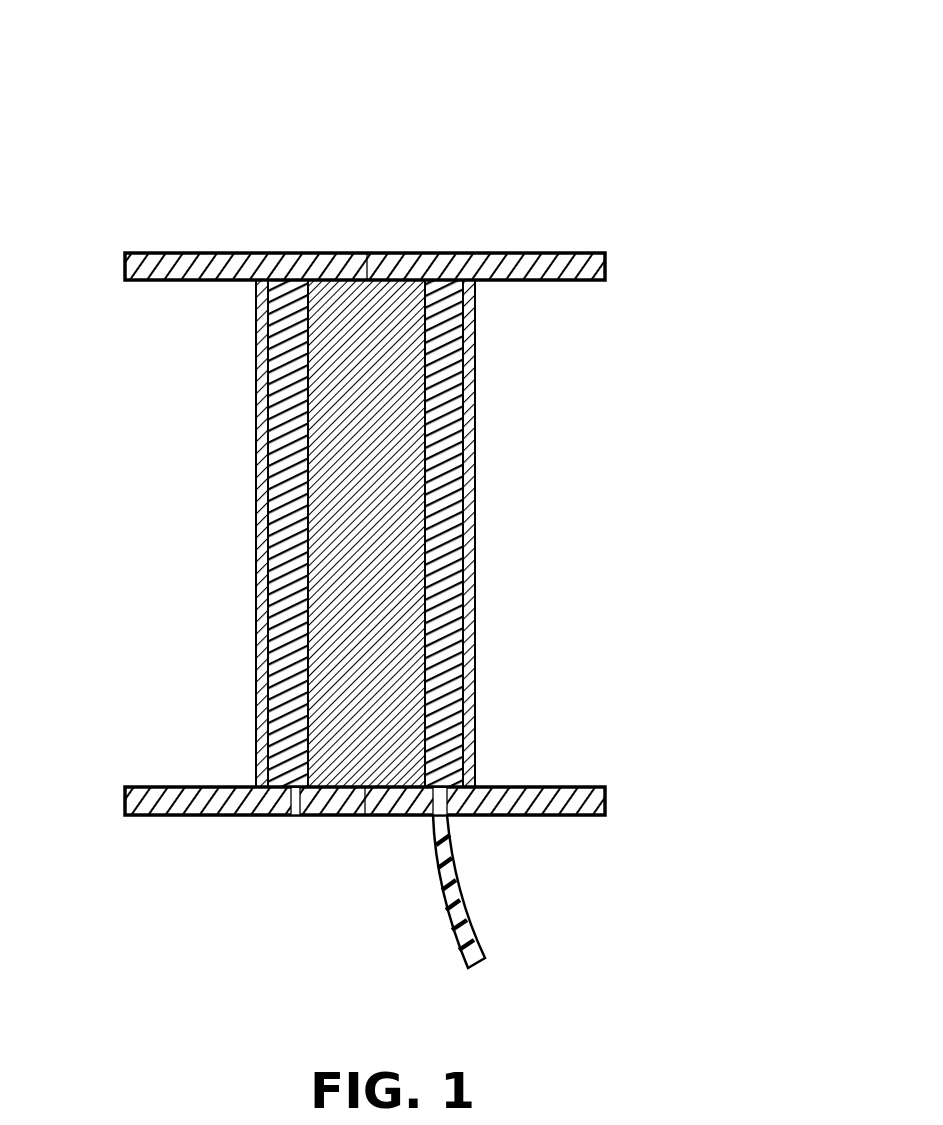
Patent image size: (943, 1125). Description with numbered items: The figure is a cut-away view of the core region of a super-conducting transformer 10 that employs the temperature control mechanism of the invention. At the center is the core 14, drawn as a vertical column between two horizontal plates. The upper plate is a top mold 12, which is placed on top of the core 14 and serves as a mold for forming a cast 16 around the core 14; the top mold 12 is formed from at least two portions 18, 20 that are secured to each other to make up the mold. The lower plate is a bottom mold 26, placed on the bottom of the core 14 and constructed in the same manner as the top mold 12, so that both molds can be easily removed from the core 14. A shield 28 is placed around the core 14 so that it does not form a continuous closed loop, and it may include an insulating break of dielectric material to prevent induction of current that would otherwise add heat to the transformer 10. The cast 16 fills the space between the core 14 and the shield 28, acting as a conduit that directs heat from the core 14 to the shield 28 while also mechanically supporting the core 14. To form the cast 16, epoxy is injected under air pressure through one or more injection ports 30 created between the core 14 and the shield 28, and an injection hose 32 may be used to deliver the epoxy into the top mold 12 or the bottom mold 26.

The super-conducting transformer 10 is at (654, 81).
The top mold 12 is at (588, 251).
The core 14 is at (405, 462).
The cast 16 is at (445, 345).
The mold portion 18 is at (437, 253).
The mold portion 20 is at (300, 253).
The bottom mold 26 is at (565, 786).
The shield 28 is at (257, 633).
The injection port 30 is at (295, 815).
The injection hose 32 is at (464, 898).